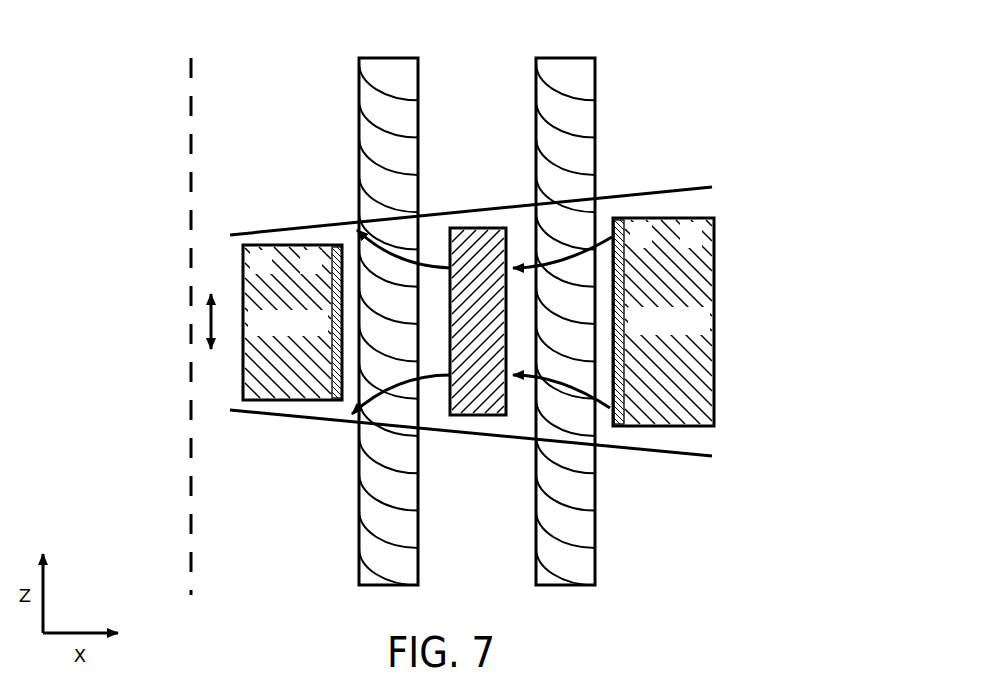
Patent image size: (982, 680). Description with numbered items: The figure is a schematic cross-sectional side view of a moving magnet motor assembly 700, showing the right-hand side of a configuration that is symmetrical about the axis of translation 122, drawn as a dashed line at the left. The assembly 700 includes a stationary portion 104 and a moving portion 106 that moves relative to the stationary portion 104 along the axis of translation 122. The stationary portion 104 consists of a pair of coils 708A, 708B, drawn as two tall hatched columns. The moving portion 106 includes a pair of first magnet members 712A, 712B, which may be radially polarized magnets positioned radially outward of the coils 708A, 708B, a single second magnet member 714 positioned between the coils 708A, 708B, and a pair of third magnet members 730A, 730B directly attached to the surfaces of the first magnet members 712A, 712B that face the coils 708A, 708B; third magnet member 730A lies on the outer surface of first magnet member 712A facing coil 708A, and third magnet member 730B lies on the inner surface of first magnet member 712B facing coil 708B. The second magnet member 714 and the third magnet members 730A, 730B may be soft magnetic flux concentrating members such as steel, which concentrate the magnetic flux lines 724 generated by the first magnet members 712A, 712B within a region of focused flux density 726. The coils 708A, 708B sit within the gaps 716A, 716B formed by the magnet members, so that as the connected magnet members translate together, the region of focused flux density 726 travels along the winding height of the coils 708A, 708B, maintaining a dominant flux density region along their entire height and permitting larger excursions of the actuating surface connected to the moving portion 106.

The assembly 700 is at (783, 77).
The stationary portion 104 is at (625, 78).
The moving portion 106 is at (730, 257).
The axis of translation 122 is at (194, 105).
The coil 708A is at (392, 58).
The coil 708B is at (564, 58).
The first magnet member 712A is at (275, 245).
The first magnet member 712B is at (685, 218).
The third magnet member 730A is at (341, 245).
The third magnet member 730B is at (619, 218).
The second magnet member 714 is at (484, 228).
The magnetic flux lines 724 is at (436, 264).
The gap 716A is at (340, 412).
The gap 716B is at (606, 427).
The region of concentrated or focused flux density 726 is at (688, 458).